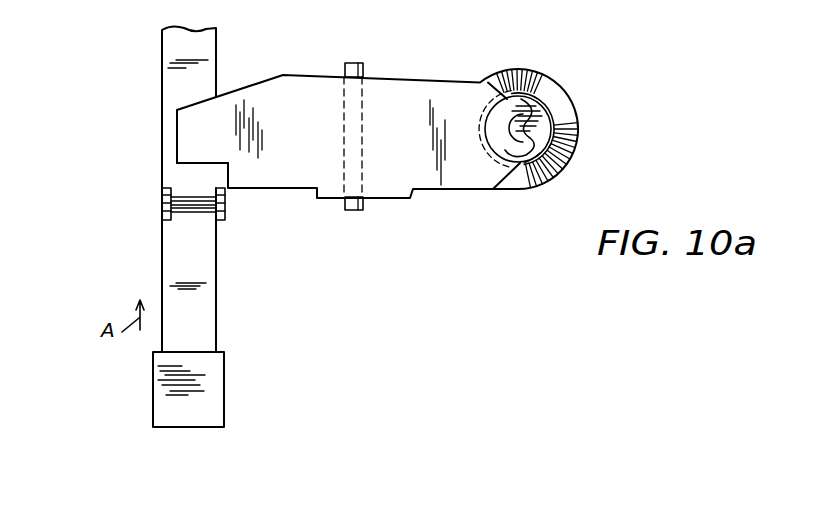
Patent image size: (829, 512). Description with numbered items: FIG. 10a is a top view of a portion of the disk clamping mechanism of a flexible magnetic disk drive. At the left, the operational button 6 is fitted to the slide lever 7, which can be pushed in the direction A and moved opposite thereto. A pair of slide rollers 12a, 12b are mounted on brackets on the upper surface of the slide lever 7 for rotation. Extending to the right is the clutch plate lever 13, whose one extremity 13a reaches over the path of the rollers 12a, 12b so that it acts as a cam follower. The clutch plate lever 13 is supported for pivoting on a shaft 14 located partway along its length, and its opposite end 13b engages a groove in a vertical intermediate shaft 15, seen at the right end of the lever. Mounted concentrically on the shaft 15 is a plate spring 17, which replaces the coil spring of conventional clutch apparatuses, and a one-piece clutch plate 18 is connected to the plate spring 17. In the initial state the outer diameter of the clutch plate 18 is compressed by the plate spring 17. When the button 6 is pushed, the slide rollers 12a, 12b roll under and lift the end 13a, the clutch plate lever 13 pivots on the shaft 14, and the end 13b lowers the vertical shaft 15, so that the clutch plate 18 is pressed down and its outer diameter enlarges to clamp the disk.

The operational button 6 is at (212, 380).
The slide lever 7 is at (207, 314).
The slide roller 12a is at (183, 210).
The slide roller 12b is at (158, 233).
The clutch plate lever 13 is at (282, 90).
The extremity of clutch plate lever 13a is at (180, 122).
The opposite end of clutch plate lever 13b is at (557, 107).
The shaft 14 is at (366, 71).
The vertical intermediate shaft 15 is at (562, 160).
The plate spring 17 is at (542, 172).
The one-piece clutch plate 18 is at (555, 131).